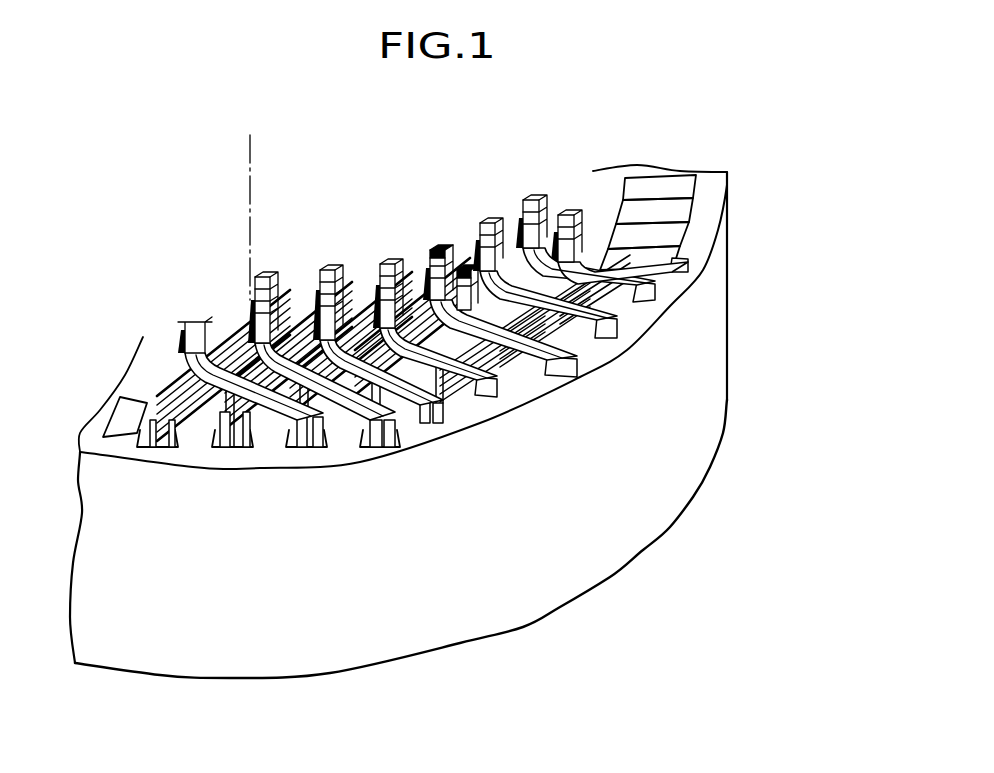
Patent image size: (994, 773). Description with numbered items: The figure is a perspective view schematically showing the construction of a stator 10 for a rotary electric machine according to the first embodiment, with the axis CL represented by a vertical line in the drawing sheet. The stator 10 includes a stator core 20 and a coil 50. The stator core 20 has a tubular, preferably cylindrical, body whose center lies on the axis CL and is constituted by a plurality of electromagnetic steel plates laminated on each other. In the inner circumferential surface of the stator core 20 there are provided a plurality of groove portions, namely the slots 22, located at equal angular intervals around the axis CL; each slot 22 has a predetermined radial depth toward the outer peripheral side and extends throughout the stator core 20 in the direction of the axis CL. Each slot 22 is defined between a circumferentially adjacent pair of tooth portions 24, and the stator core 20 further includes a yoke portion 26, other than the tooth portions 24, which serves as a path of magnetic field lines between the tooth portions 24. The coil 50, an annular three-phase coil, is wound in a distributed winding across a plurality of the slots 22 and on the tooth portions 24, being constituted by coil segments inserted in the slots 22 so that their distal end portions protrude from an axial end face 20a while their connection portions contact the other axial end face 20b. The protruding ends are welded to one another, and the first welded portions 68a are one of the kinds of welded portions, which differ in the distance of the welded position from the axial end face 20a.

The stator 10 is at (172, 197).
The stator core 20 is at (703, 380).
The axial end face 20a is at (677, 277).
The axial end face 20b is at (523, 627).
The slot 22 is at (460, 398).
The tooth portion 24 is at (403, 415).
The yoke portion 26 is at (577, 377).
The coil 50 is at (380, 253).
The first welded portion 68a is at (442, 247).